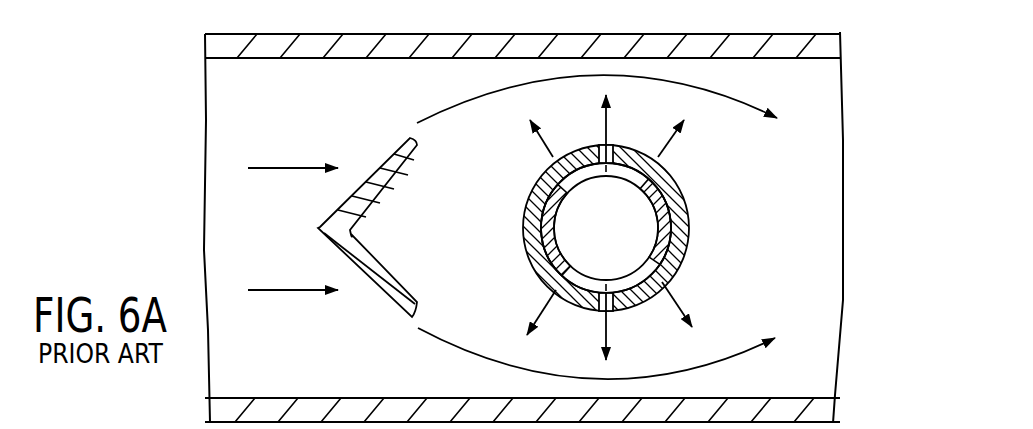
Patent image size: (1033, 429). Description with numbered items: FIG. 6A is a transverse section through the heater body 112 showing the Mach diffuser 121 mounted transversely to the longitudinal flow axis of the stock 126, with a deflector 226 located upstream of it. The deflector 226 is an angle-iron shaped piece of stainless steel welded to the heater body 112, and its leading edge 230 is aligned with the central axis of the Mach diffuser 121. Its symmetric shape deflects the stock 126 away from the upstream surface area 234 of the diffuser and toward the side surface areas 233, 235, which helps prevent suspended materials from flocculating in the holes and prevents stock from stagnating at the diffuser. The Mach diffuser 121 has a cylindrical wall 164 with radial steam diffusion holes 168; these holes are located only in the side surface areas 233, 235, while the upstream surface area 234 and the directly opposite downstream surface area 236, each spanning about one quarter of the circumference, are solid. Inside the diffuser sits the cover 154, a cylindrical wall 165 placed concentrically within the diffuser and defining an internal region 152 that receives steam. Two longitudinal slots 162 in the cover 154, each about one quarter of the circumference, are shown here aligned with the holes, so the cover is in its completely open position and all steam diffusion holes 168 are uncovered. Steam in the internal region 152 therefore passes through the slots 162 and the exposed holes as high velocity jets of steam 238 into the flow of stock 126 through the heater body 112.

The heater body 112 is at (747, 42).
The Mach diffuser 121 is at (676, 193).
The stock 126 is at (287, 165).
The internal region 152 is at (624, 246).
The cover 154 is at (670, 217).
The slots 162 is at (583, 177).
The cylindrical wall 164 is at (540, 170).
The cylindrical wall 165 is at (532, 208).
The steam diffusion holes 168 is at (657, 294).
The deflector 226 is at (366, 265).
The leading edge 230 is at (327, 228).
The side surface area 233 is at (594, 153).
The upstream surface area 234 is at (528, 238).
The side surface area 235 is at (582, 302).
The downstream surface area 236 is at (681, 238).
The jets of steam 238 is at (548, 302).